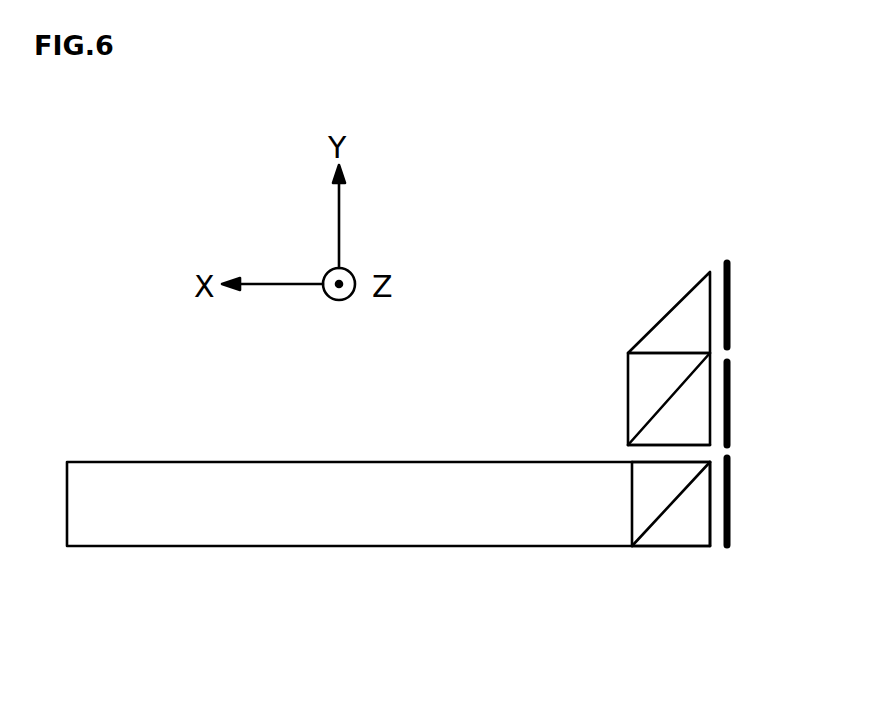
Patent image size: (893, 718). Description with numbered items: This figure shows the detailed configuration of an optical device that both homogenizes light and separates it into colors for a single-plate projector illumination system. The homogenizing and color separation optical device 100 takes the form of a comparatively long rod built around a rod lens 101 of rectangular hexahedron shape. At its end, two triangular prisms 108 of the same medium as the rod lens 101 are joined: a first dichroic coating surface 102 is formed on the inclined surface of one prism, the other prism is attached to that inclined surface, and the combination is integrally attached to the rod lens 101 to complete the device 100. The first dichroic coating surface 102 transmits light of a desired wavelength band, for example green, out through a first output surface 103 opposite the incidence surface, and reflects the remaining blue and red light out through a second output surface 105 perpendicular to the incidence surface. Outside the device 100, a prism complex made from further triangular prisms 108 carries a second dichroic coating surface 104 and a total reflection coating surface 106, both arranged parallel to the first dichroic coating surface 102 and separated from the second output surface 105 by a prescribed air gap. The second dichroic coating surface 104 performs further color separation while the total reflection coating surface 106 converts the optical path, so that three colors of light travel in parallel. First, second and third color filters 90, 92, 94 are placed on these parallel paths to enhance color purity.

The homogenizing and color separation optical device 100 is at (96, 418).
The rod lens 101 is at (200, 470).
The first dichroic coating surface 102 is at (639, 542).
The first output surface 103 is at (712, 522).
The second dichroic coating surface 104 is at (652, 405).
The second output surface 105 is at (660, 458).
The total reflection coating surface 106 is at (645, 333).
The triangular prisms 108 is at (688, 546).
The first color filter 90 is at (733, 498).
The second color filter 92 is at (733, 403).
The third color filter 94 is at (733, 306).